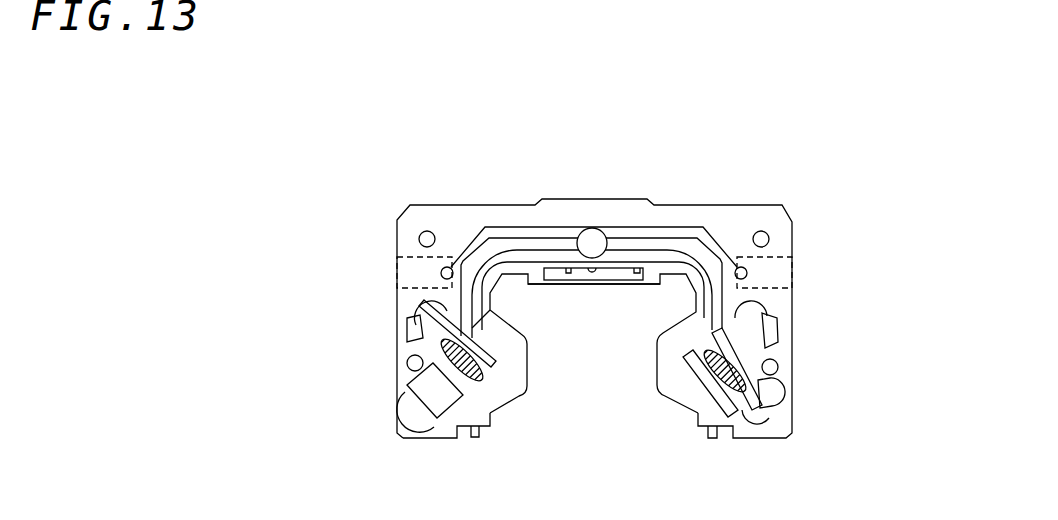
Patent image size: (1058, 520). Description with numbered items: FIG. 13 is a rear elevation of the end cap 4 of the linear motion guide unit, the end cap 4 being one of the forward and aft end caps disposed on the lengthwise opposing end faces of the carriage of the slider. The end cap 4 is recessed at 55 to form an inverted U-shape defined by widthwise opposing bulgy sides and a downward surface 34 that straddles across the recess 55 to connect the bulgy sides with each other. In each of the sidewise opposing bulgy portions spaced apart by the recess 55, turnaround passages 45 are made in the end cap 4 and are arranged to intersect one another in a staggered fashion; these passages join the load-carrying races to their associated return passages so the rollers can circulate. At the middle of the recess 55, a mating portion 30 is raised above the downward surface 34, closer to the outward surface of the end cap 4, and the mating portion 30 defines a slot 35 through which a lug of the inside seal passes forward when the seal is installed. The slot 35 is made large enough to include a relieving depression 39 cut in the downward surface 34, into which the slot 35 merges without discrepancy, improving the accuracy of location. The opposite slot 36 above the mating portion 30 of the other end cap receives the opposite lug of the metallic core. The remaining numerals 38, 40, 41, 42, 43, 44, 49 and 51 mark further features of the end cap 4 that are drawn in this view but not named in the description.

The end cap 4 is at (731, 207).
The mating portion 30 is at (583, 283).
The downward surface 34 is at (516, 280).
The slot 35 is at (618, 283).
The opposite slot 36 is at (514, 256).
The clamp member 38 is at (492, 335).
The relieving depression 39 is at (567, 268).
The nut 40 is at (410, 408).
The tab 41 is at (710, 440).
The ball 42 is at (594, 240).
The pin 43 is at (406, 297).
The screw 44 is at (480, 404).
The turnaround passage 45 is at (428, 398).
The region 49 is at (403, 267).
The notch 51 is at (636, 268).
The recess 55 is at (552, 360).